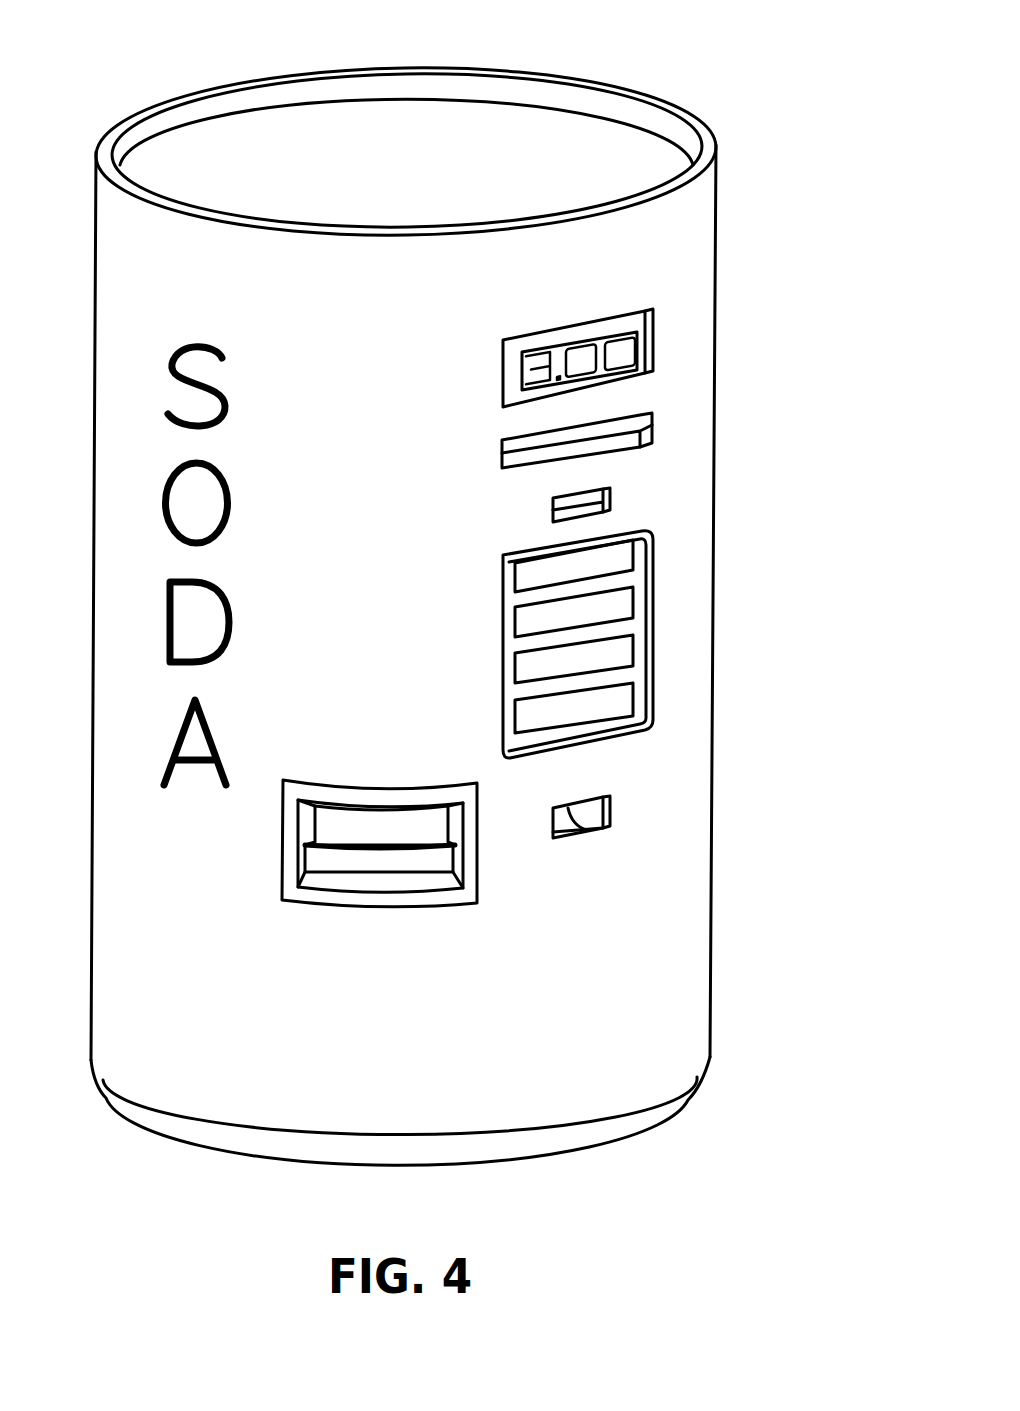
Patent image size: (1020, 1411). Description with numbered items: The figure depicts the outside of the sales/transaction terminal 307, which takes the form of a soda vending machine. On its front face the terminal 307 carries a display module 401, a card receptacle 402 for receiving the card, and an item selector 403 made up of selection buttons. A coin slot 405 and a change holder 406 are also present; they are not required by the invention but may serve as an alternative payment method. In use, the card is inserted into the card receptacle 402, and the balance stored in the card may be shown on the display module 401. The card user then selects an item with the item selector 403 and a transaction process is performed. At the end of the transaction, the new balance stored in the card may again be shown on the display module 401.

The sales/transaction terminal 307 is at (438, 34).
The display module 401 is at (652, 348).
The card receptacle 402 is at (652, 425).
The coin slot 405 is at (610, 495).
The item selector 403 is at (638, 625).
The change holder 406 is at (612, 812).